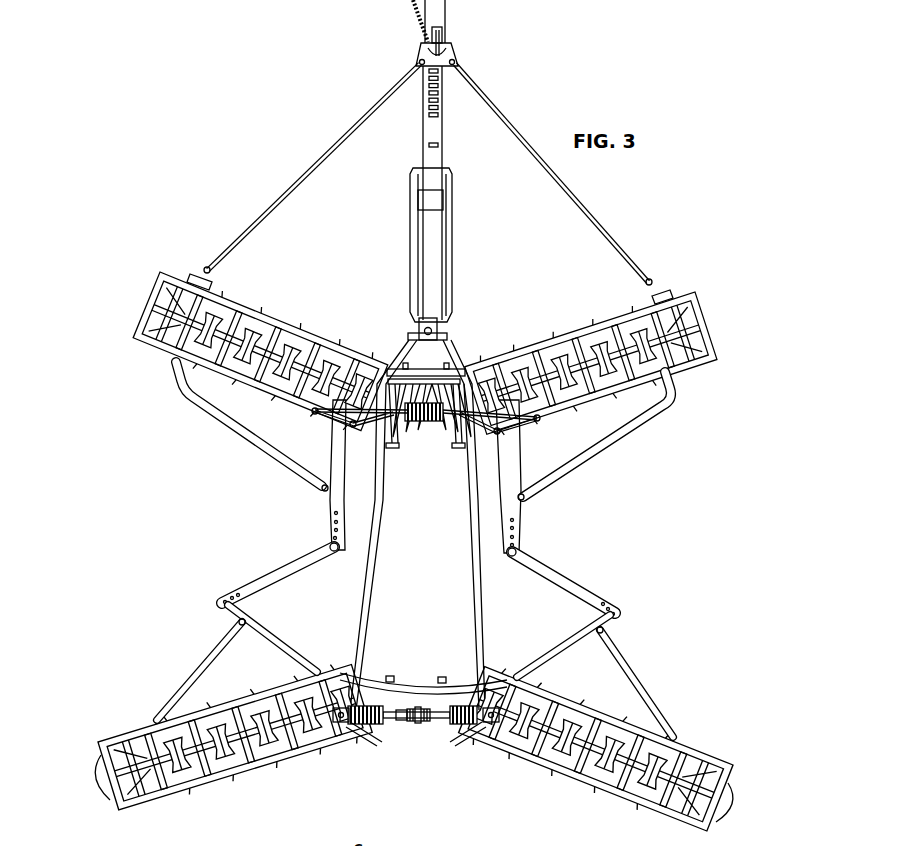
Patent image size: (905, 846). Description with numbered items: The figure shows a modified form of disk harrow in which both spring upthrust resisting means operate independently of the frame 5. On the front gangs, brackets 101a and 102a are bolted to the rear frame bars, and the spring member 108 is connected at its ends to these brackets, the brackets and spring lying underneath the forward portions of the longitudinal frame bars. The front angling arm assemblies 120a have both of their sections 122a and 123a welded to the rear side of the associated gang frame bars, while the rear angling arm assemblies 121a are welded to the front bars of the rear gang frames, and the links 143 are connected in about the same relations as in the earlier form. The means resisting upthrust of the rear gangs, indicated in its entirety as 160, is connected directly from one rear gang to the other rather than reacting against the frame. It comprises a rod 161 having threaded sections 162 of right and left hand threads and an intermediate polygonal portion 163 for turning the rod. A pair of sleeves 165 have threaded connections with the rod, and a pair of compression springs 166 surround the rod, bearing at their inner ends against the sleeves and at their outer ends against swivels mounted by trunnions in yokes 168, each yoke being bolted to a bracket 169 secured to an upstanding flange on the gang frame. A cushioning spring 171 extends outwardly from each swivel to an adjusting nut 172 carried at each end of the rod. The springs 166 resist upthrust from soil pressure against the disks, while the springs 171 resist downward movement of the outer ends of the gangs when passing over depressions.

The frame 5 is at (345, 568).
The bracket 101a is at (347, 420).
The bracket 102a is at (523, 430).
The spring member 108 is at (424, 430).
The angling arm assembly 120a is at (268, 460).
The rear angling arm assembly 121a is at (192, 663).
The section of angling arm assembly 122a is at (232, 423).
The section of angling arm assembly 123a is at (347, 450).
The link 143 is at (272, 577).
The upthrust resisting means 160 is at (402, 727).
The rod 161 is at (417, 727).
The threaded section 162 is at (416, 706).
The intermediate polygonal portion 163 is at (410, 722).
The sleeve 165 is at (388, 713).
The compression spring 166 is at (366, 732).
The yoke 168 is at (338, 730).
The bracket 169 is at (350, 737).
The cushioning spring 171 is at (338, 703).
The adjusting nut 172 is at (303, 678).